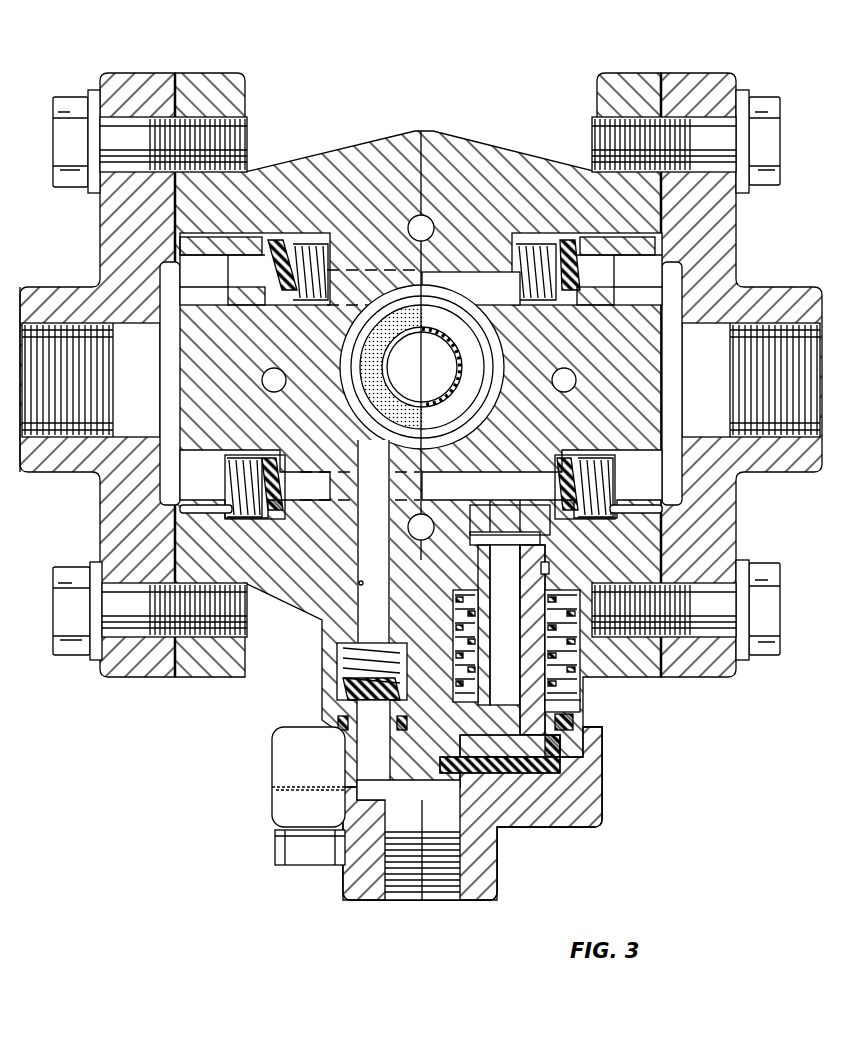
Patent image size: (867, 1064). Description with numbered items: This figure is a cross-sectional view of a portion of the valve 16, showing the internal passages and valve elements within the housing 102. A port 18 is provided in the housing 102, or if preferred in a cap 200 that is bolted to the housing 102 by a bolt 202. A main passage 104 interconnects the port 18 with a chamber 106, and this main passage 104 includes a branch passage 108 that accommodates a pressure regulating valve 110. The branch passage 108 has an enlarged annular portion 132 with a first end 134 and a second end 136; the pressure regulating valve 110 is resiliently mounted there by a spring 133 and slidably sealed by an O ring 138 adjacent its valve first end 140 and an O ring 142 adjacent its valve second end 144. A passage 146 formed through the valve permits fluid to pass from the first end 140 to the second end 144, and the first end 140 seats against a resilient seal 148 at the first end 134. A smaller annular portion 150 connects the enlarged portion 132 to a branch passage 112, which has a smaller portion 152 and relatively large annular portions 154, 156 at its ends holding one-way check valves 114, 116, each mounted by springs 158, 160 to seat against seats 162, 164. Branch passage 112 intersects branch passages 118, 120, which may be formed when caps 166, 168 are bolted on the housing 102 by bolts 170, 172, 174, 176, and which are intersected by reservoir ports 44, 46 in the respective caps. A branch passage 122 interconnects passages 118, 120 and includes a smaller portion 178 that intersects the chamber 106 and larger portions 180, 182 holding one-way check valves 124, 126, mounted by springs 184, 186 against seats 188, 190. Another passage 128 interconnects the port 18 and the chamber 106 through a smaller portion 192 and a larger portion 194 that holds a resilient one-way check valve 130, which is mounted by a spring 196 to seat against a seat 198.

The valve 16 is at (631, 46).
The port 18 is at (453, 896).
The reservoir port 44 is at (50, 432).
The reservoir port 46 is at (790, 432).
The housing 102 is at (452, 128).
The main passage 104 is at (546, 515).
The chamber 106 is at (503, 354).
The branch passage 108 is at (572, 662).
The pressure regulating valve 110 is at (548, 690).
The branch passage 112 is at (478, 472).
The one-way check valve 114 is at (268, 450).
The one-way check valve 116 is at (576, 455).
The branch passage 118 is at (168, 300).
The branch passage 120 is at (668, 300).
The branch passage 122 is at (456, 272).
The one-way check valve 124 is at (278, 248).
The one-way check valve 126 is at (574, 240).
The passage 128 is at (366, 553).
The one-way check valve 130 is at (340, 695).
The enlarged annular portion 132 is at (550, 705).
The spring 133 is at (456, 618).
The first end 134 is at (556, 765).
The second end 136 is at (468, 540).
The O ring 138 is at (575, 724).
The valve first end 140 is at (552, 750).
The O ring 142 is at (548, 568).
The valve second end 144 is at (482, 556).
The passage 146 is at (492, 590).
The resilient seal 148 is at (504, 770).
The smaller annular portion 150 is at (492, 502).
The smaller portion 152 is at (517, 488).
The annular portion 154 is at (203, 508).
The annular portion 156 is at (629, 512).
The spring 158 is at (236, 457).
The spring 160 is at (613, 460).
The seat 162 is at (292, 458).
The seat 164 is at (552, 460).
The cap 166 is at (112, 228).
The cap 168 is at (724, 228).
The bolt 170 is at (78, 100).
The bolt 172 is at (80, 658).
The bolt 174 is at (760, 98).
The bolt 176 is at (758, 656).
The smaller portion 178 is at (350, 270).
The larger portion 180 is at (200, 242).
The larger portion 182 is at (625, 240).
The spring 184 is at (298, 243).
The spring 186 is at (526, 243).
The seat 188 is at (246, 305).
The seat 190 is at (583, 305).
The smaller portion 192 is at (360, 586).
The larger portion 194 is at (335, 760).
The spring 196 is at (338, 656).
The seat 198 is at (340, 718).
The cap 200 is at (579, 832).
The bolt 202 is at (305, 865).